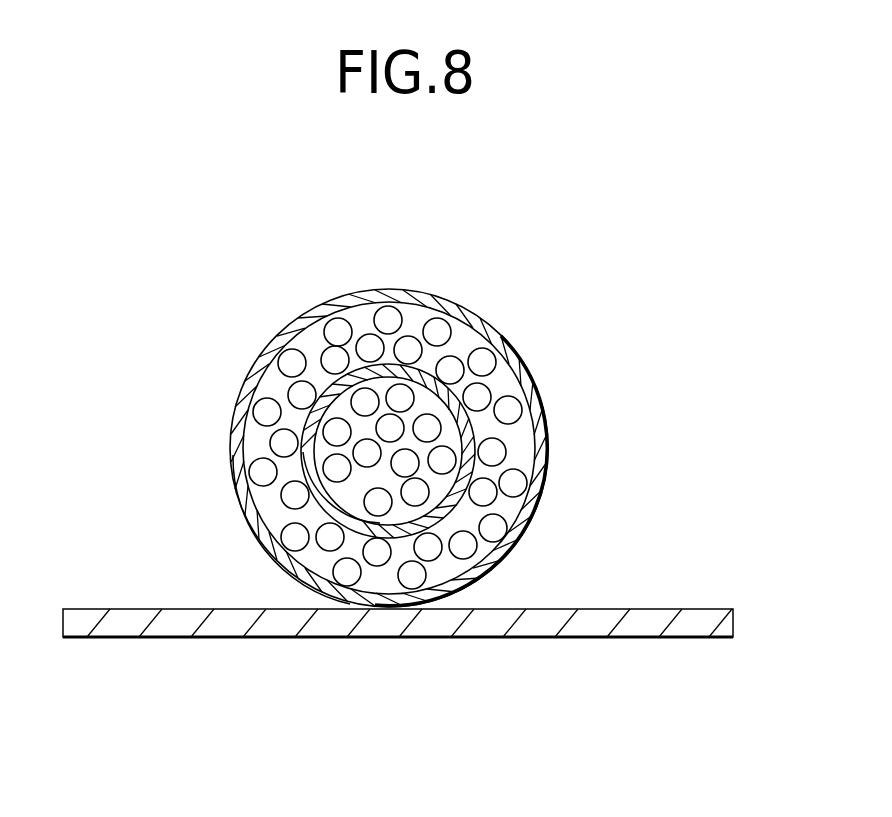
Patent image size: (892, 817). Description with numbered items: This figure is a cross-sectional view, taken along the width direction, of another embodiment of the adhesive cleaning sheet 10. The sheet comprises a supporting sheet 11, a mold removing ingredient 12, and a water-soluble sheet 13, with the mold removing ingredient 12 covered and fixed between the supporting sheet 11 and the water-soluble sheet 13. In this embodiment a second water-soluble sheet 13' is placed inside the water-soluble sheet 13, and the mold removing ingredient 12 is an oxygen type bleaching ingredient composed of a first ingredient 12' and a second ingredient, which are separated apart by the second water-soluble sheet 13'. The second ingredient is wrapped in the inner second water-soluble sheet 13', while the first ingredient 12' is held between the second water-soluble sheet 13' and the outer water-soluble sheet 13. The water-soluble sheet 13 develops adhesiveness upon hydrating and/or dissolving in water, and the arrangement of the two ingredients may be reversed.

The adhesive cleaning sheet 10 is at (699, 272).
The supporting sheet 11 is at (580, 638).
The mold removing ingredient 12 is at (469, 448).
The first ingredient 12' is at (443, 447).
The water-soluble sheet 13 is at (389, 410).
The second water-soluble sheet 13' is at (364, 398).